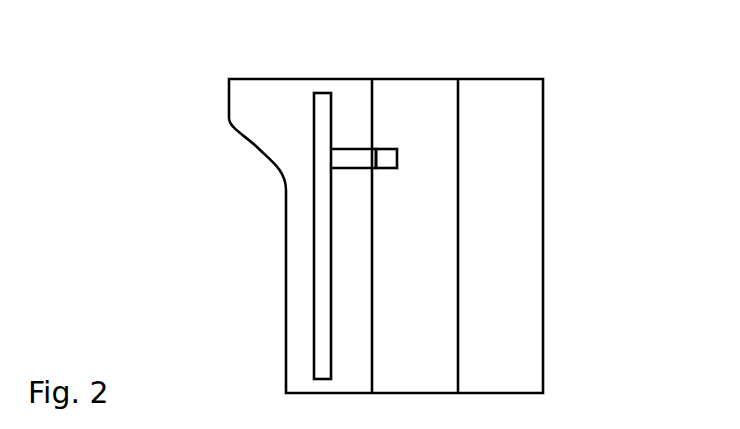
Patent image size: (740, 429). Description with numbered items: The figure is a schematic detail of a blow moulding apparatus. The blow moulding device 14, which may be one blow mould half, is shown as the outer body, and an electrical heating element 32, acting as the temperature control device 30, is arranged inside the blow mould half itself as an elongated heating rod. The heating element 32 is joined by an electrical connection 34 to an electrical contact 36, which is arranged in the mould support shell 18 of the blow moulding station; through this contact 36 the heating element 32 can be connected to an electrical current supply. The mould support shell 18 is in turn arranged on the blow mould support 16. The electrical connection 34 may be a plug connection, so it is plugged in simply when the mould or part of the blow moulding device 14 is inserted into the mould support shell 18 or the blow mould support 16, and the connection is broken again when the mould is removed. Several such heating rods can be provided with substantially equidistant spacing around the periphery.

The blow moulding device 14 is at (285, 108).
The blow mould support 16 is at (482, 110).
The mould support shell 18 is at (430, 110).
The temperature control device 30 is at (291, 154).
The electrical heating element 32 is at (321, 293).
The electrical connection 34 is at (356, 148).
The electrical contact 36 is at (397, 158).